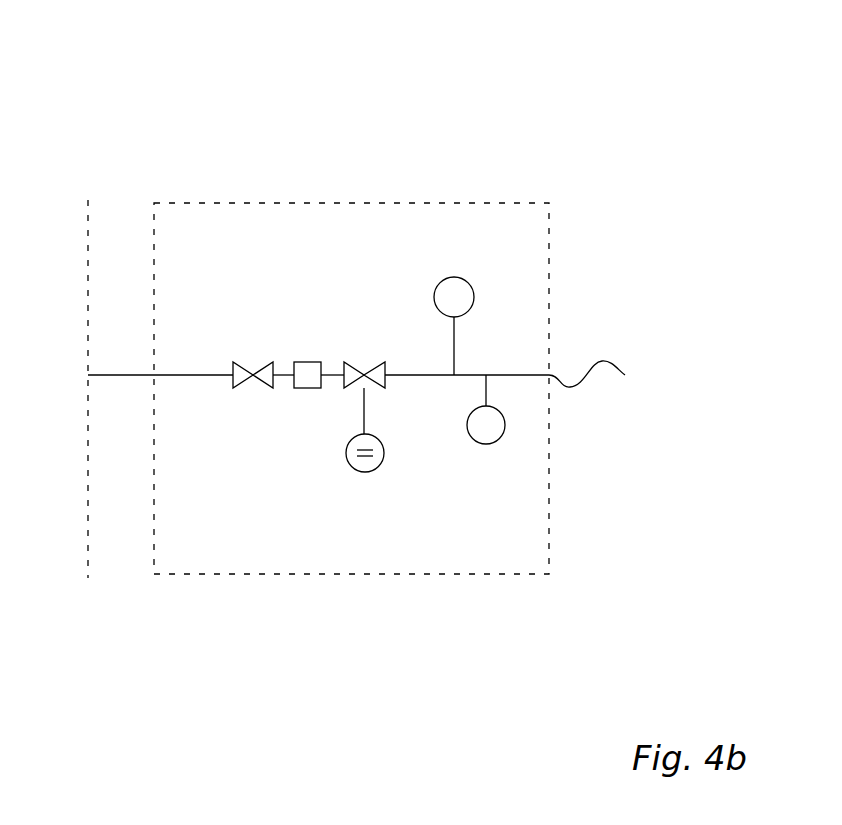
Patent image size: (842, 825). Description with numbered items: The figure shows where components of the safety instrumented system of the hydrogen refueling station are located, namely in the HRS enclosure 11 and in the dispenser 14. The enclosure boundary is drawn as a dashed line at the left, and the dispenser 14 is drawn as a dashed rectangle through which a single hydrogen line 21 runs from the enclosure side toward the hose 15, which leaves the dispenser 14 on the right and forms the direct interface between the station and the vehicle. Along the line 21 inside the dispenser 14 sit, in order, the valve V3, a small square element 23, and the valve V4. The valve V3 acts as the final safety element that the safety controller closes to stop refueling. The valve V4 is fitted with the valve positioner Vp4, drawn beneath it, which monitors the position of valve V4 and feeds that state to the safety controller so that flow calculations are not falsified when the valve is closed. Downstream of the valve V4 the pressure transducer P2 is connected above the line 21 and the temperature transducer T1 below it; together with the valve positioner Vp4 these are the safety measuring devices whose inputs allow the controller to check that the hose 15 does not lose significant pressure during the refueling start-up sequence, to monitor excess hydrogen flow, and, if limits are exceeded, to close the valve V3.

The HRS enclosure 11 is at (88, 243).
The dispenser 14 is at (183, 203).
The hose 15 is at (600, 360).
The conduit 21 is at (438, 375).
The flow restriction 23 is at (305, 389).
The valve V3 is at (253, 362).
The valve V4 is at (364, 362).
The valve positioner Vp4 is at (365, 472).
The pressure transducer P2 is at (455, 277).
The temperature transducer T1 is at (495, 443).